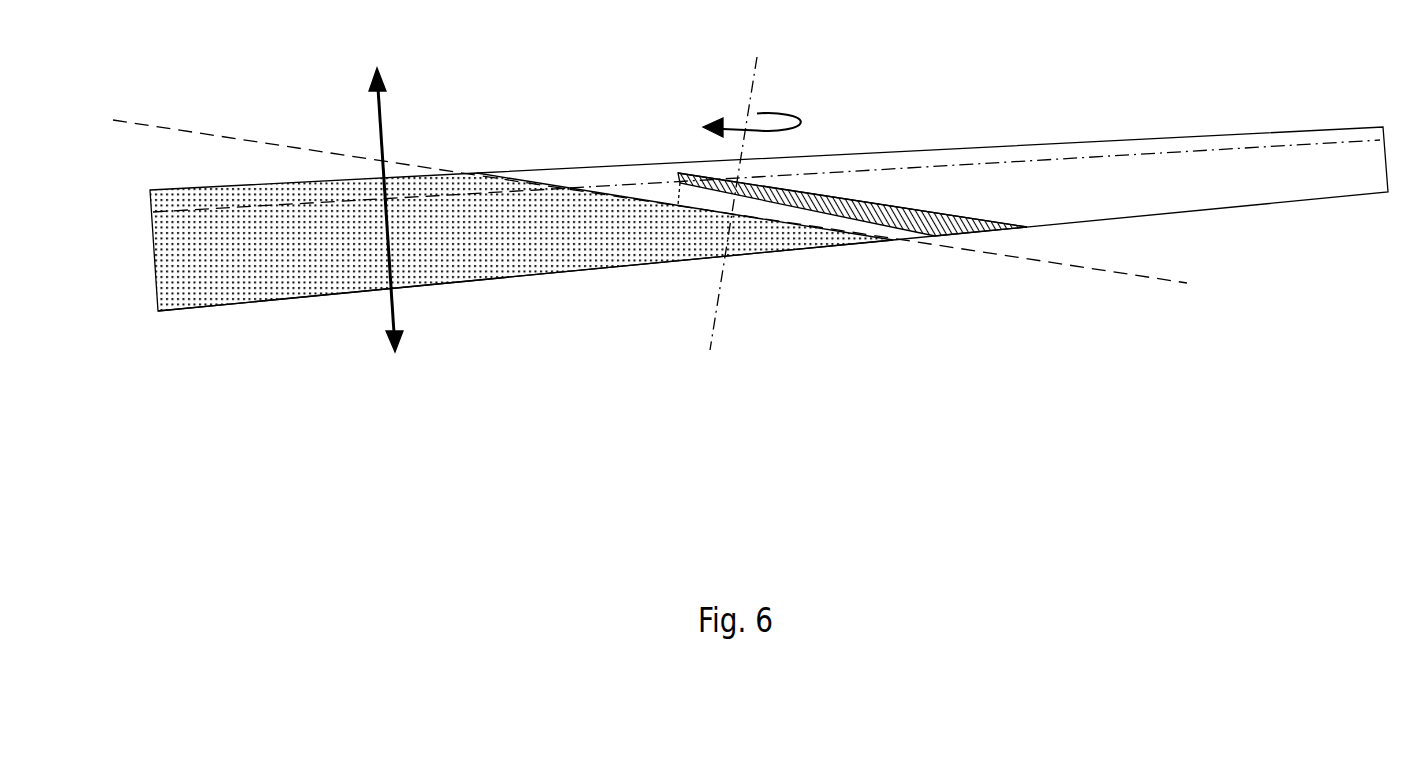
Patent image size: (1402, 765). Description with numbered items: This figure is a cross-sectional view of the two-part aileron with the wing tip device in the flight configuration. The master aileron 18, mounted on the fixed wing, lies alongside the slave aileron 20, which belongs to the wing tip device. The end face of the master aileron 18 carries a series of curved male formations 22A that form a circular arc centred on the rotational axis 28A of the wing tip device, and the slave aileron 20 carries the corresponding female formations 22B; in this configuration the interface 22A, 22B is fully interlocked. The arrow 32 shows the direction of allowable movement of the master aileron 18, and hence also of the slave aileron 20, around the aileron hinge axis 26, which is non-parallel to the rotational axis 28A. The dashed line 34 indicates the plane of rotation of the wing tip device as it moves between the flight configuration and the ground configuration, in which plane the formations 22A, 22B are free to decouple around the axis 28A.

The master aileron 18 is at (283, 275).
The slave aileron 20 is at (1190, 183).
The interface half with curved male formations 22A is at (933, 240).
The interface half with female formations 22B is at (803, 225).
The aileron hinge axis 26 is at (182, 210).
The rotational axis of the wing tip device 28A is at (750, 100).
The arrow indicating direction of allowable aileron movement 32 is at (398, 305).
The dashed line indicating plane of rotation of the wing tip device 34 is at (1042, 262).